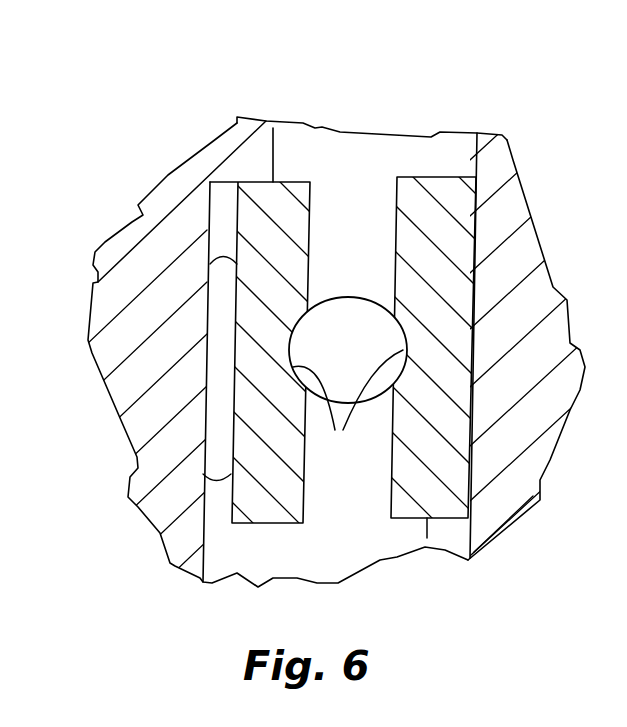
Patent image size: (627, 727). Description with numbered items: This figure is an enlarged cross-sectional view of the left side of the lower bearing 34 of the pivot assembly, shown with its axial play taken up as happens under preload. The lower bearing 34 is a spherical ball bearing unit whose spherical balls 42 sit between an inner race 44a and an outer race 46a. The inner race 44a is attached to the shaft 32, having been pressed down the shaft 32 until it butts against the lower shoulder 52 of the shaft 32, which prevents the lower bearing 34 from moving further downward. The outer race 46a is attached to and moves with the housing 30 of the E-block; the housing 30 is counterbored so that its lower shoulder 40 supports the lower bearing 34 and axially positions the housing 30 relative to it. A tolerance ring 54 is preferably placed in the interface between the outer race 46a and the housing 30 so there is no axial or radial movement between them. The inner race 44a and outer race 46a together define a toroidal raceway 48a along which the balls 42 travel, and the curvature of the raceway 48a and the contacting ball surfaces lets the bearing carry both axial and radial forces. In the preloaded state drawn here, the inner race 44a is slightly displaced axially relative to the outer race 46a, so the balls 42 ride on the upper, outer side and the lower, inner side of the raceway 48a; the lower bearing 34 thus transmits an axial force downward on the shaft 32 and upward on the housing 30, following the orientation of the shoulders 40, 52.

The housing 30 is at (163, 443).
The shaft 32 is at (540, 338).
The lower bearing 34 is at (372, 107).
The lower shoulder 40 is at (250, 163).
The spherical balls 42 is at (347, 317).
The inner race 44a is at (450, 195).
The outer race 46a is at (285, 208).
The toroidal raceway 48a is at (348, 411).
The lower shoulder 52 is at (447, 538).
The tolerance ring 54 is at (220, 307).